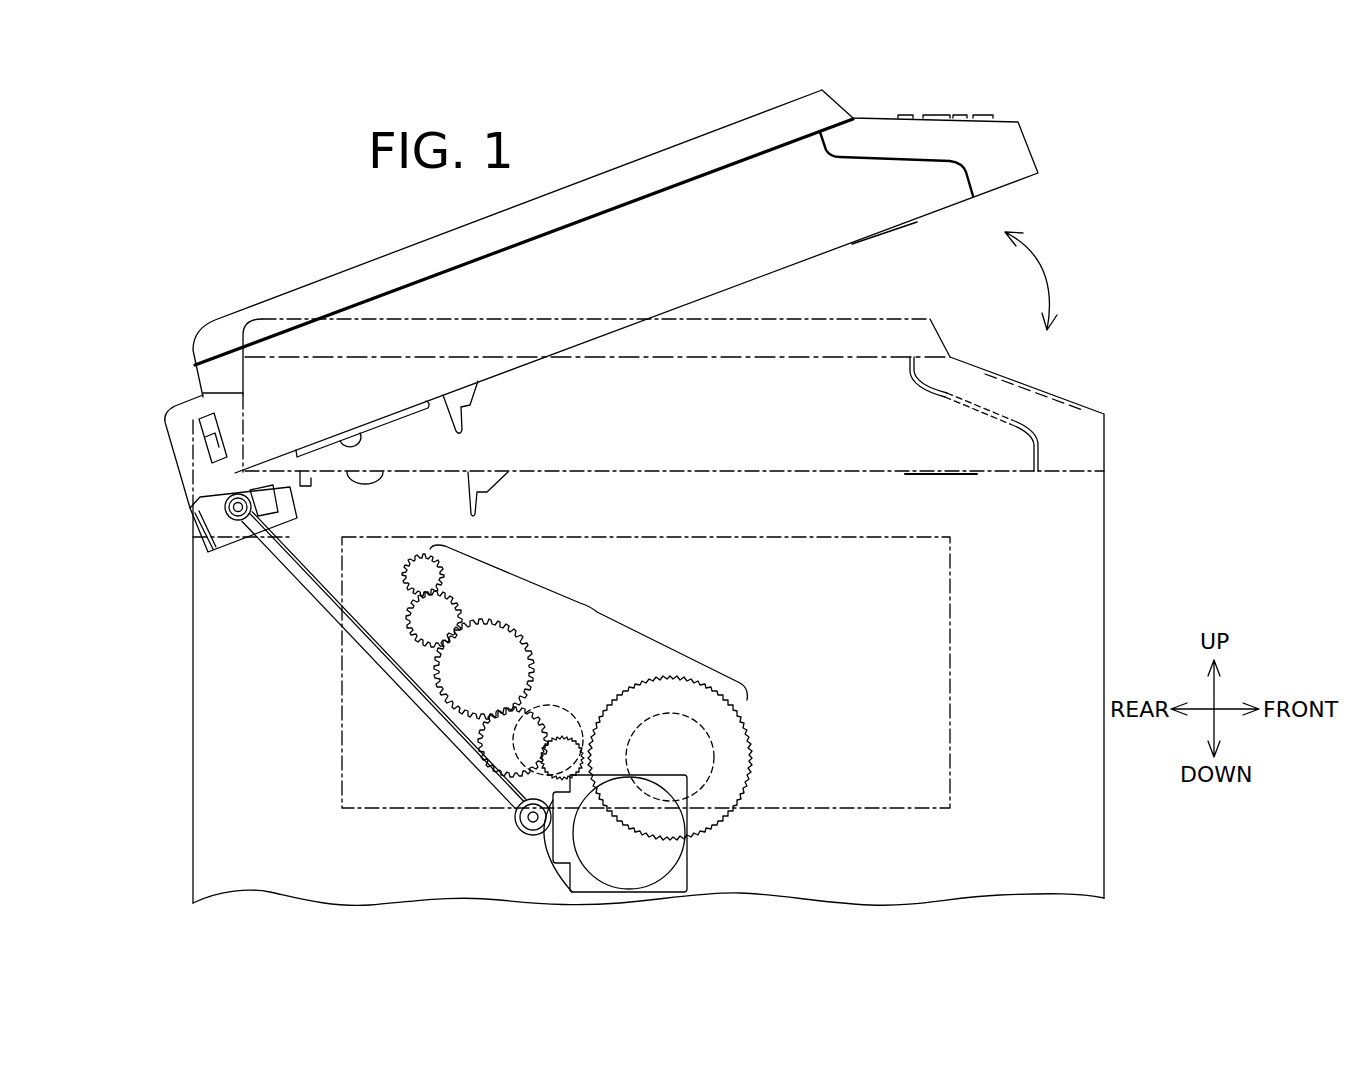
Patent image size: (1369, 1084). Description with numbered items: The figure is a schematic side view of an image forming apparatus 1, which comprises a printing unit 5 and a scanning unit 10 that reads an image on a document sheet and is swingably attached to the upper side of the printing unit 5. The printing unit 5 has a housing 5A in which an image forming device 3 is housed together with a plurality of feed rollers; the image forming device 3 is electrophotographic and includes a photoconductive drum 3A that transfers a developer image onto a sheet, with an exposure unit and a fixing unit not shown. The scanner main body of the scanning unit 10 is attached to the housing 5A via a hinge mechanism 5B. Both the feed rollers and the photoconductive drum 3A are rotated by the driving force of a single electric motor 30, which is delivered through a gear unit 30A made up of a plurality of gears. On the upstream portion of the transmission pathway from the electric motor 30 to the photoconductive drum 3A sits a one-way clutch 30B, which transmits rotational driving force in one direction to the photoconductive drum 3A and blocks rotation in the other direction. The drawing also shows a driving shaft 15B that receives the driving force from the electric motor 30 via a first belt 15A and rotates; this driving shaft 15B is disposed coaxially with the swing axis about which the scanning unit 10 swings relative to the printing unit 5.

The image forming apparatus 1 is at (289, 190).
The scanning unit 10 is at (174, 332).
The printing unit 5 is at (177, 777).
The housing 5A is at (193, 640).
The hinge mechanism 5B is at (190, 526).
The first belt 15A is at (293, 583).
The driving shaft 15B is at (233, 523).
The image forming device 3 is at (951, 622).
The photoconductive drum 3A is at (543, 707).
The electric motor 30 is at (657, 857).
The gear unit 30A is at (612, 606).
The one-way clutch 30B is at (748, 725).